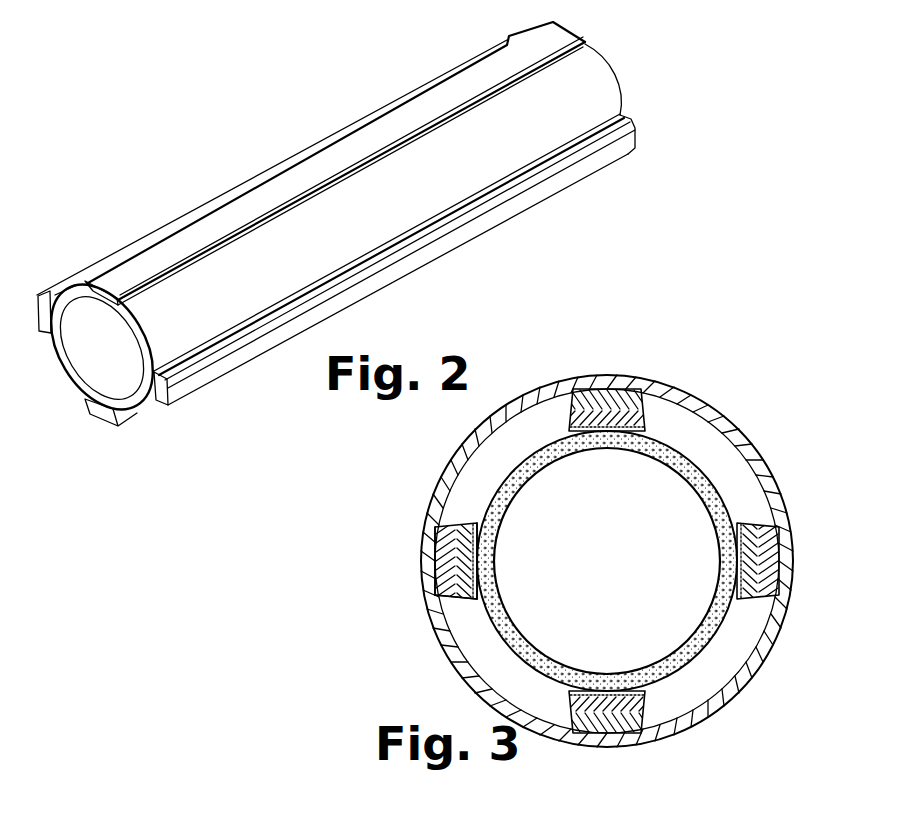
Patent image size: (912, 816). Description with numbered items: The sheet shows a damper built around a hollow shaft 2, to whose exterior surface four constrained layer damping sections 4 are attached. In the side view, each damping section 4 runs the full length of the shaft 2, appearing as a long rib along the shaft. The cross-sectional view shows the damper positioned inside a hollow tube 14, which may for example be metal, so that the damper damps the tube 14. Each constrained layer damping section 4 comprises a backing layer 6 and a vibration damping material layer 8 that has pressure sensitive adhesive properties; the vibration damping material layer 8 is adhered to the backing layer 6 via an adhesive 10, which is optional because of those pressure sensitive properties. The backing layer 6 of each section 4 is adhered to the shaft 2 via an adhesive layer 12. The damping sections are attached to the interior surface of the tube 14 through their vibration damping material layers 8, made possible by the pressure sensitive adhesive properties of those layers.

In FIG. 2, the hollow shaft 2 is at (583, 77).
In FIG. 3, the hollow shaft 2 is at (533, 651).
In FIG. 2, the constrained layer damping section 4 is at (159, 403).
In FIG. 3, the constrained layer damping section 4 is at (455, 521).
In FIG. 2, the backing layer 6 is at (258, 318).
In FIG. 3, the backing layer 6 is at (474, 599).
In FIG. 2, the vibration damping material layer 8 is at (241, 353).
In FIG. 3, the vibration damping material layer 8 is at (437, 566).
In FIG. 2, the adhesive 10 is at (330, 283).
In FIG. 3, the adhesive 10 is at (437, 597).
In FIG. 2, the adhesive layer 12 is at (103, 300).
In FIG. 3, the adhesive layer 12 is at (480, 532).
In FIG. 3, the tube 14 is at (756, 449).